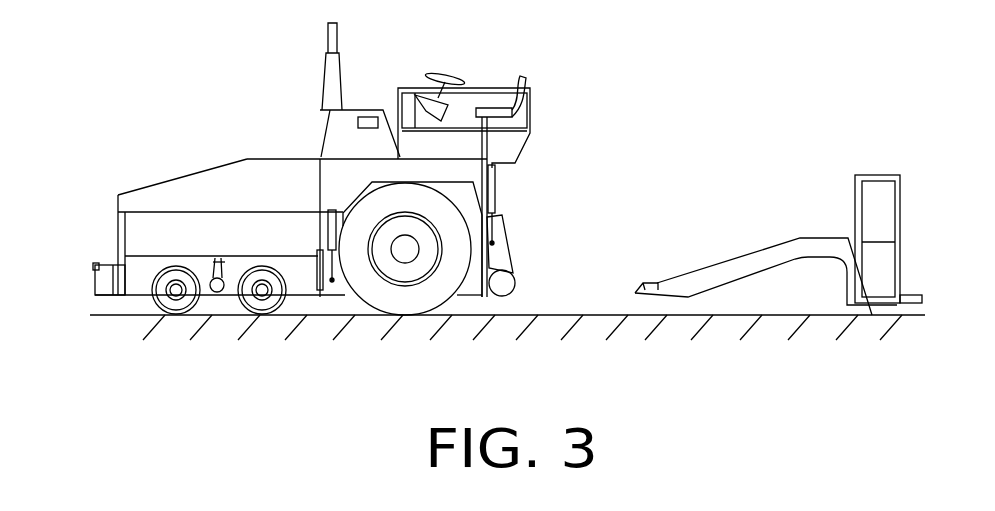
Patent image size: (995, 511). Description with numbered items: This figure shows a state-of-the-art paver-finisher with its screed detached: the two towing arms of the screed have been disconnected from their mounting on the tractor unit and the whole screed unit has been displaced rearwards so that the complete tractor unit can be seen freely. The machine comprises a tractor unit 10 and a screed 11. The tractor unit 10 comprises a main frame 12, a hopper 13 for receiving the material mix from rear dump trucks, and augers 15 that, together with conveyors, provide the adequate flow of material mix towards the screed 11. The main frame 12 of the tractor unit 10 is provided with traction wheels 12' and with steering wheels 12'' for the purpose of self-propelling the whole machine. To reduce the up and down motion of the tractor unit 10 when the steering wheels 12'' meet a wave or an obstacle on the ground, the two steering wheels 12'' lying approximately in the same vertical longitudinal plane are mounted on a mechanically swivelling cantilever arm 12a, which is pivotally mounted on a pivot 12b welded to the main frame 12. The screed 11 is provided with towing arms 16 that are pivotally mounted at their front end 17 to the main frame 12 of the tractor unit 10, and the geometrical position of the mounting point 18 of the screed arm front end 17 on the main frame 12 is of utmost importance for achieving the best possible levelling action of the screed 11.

The tractor unit 10 is at (458, 170).
The screed 11 is at (883, 287).
The main frame 12 is at (106, 260).
The cantilever arm 12a is at (205, 278).
The pivot 12b is at (225, 262).
The traction wheels 12' is at (405, 278).
The steering wheels 12'' is at (219, 320).
The hopper 13 is at (280, 182).
The augers 15 is at (502, 285).
The towing arms 16 is at (802, 247).
The front end 17 is at (678, 290).
The mounting point 18 is at (330, 292).